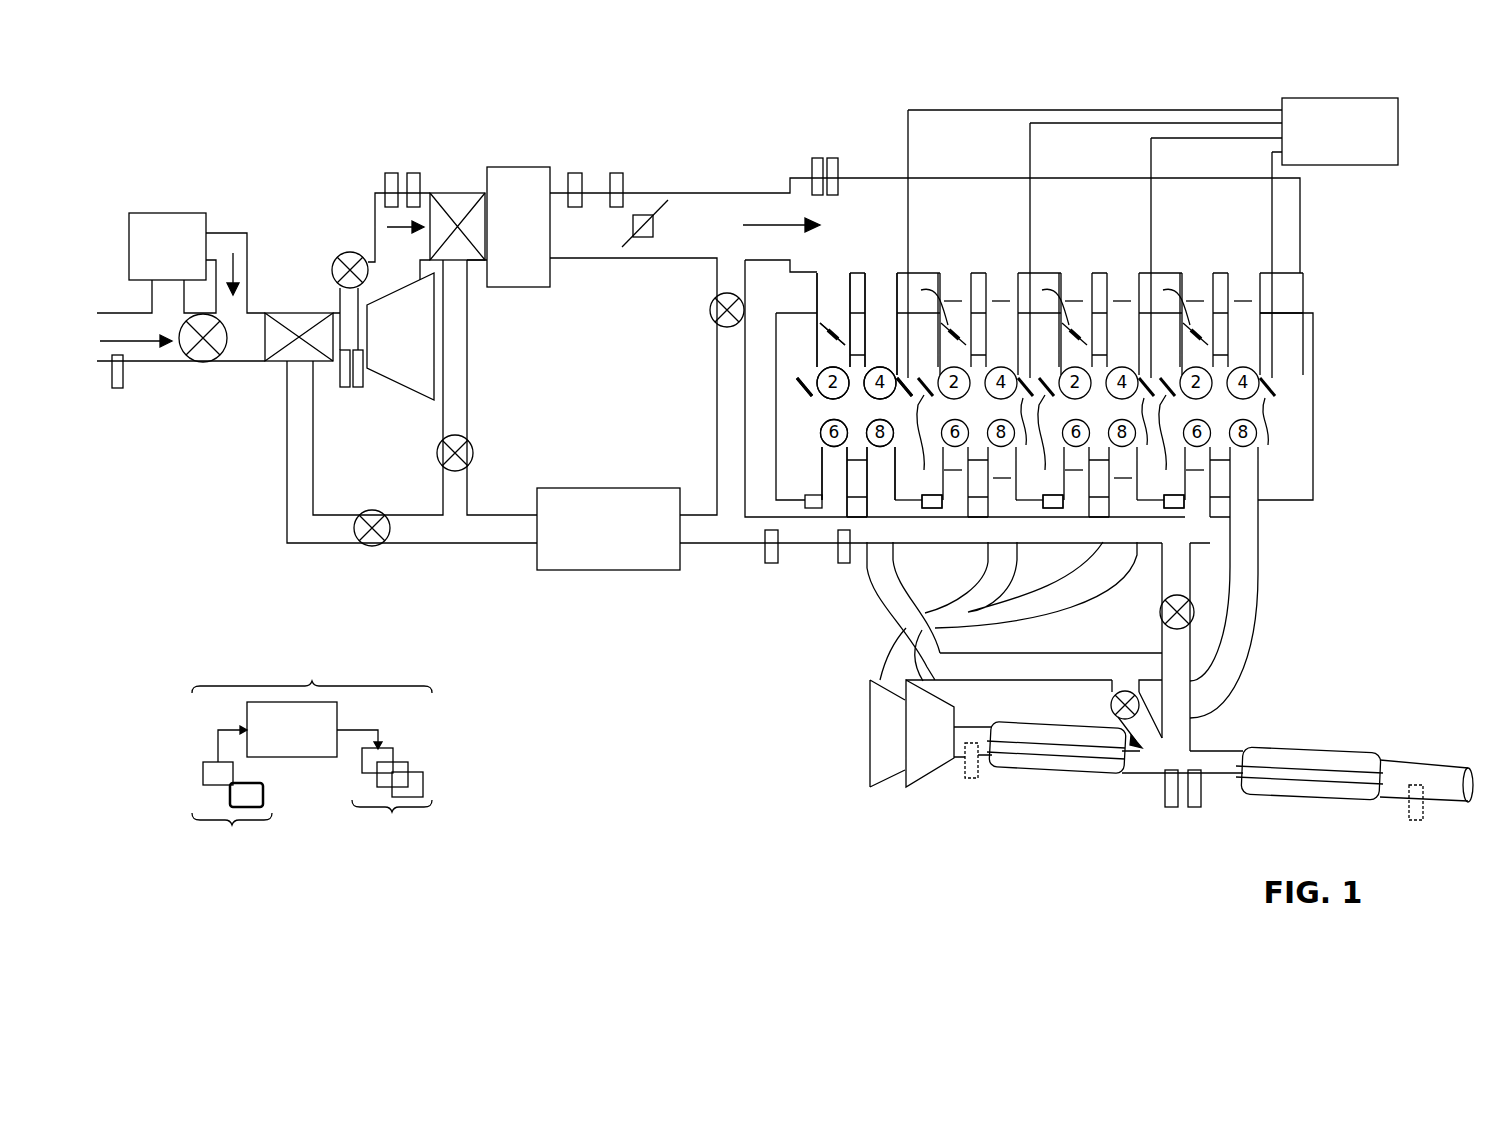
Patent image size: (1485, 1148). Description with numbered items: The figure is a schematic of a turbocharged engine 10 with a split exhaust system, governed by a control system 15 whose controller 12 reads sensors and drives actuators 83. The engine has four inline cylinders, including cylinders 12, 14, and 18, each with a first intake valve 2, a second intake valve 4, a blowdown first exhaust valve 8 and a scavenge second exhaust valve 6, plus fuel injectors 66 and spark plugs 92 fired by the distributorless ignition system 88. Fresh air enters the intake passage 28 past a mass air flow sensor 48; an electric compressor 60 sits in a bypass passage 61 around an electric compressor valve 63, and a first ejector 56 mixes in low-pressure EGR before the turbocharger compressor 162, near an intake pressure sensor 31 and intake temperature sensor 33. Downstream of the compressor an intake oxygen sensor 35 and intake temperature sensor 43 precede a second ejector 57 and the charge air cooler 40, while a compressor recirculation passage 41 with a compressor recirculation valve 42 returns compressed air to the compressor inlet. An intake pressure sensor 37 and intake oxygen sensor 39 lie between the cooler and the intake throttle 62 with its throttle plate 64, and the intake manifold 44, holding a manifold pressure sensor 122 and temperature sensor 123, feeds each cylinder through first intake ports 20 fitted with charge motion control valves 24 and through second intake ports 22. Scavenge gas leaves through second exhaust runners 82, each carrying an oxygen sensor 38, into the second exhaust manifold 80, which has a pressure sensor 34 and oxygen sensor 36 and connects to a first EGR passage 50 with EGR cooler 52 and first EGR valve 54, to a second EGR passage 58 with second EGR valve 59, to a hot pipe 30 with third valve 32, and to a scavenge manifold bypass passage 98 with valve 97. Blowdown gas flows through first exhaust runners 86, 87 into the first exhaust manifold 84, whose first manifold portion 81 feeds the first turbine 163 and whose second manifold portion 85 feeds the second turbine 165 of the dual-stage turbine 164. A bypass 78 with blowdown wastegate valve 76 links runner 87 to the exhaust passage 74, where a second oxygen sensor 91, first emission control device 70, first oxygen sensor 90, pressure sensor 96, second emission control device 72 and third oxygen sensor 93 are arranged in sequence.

The first intake valve 2 is at (833, 383).
The second intake valve 4 is at (880, 383).
The second exhaust valve 6 is at (834, 433).
The first exhaust valve 8 is at (880, 433).
The engine 10 is at (1300, 522).
The controller 12 is at (997, 425).
The cylinder 14 is at (969, 420).
The control system 15 is at (312, 757).
The cylinder 18 is at (1221, 495).
The first intake port 20 is at (823, 301).
The second intake port 22 is at (871, 301).
The charge motion control valve 24 is at (827, 325).
The air intake passage 28 is at (137, 362).
The third flow passage 30 is at (717, 375).
The intake pressure sensor 31 is at (344, 388).
The third valve 32 is at (712, 320).
The intake temperature sensor 33 is at (358, 388).
The pressure sensor 34 is at (771, 563).
The intake oxygen sensor 35 is at (412, 172).
The oxygen sensor 36 is at (844, 563).
The intake pressure sensor 37 is at (576, 173).
The oxygen sensor 38 is at (814, 508).
The intake oxygen sensor 39 is at (617, 173).
The charge air cooler 40 is at (509, 235).
The compressor recirculation passage 41 is at (340, 300).
The compressor recirculation valve 42 is at (347, 252).
The intake temperature sensor 43 is at (391, 172).
The intake manifold 44 is at (1049, 234).
The mass air flow sensor 48 is at (117, 388).
The first EGR passage 50 is at (438, 543).
The EGR cooler 52 is at (599, 541).
The first EGR valve 54 is at (365, 546).
The first ejector 56 is at (268, 362).
The second ejector 57 is at (433, 193).
The second EGR passage 58 is at (441, 415).
The second EGR valve 59 is at (473, 453).
The electric compressor 60 is at (158, 255).
The bypass passage 61 is at (224, 232).
The intake throttle 62 is at (643, 215).
The electric compressor valve 63 is at (200, 362).
The throttle plate 64 is at (627, 235).
The fuel injector 66 is at (803, 395).
The first emission control device 70 is at (1005, 724).
The second emission control device 72 is at (1280, 748).
The exhaust passage 74 is at (1140, 775).
The blowdown wastegate valve 76 is at (1113, 712).
The bypass 78 is at (1113, 694).
The second exhaust manifold 80 is at (974, 536).
The first manifold portion 81 is at (882, 662).
The second exhaust runner 82 is at (823, 470).
The actuators 83 is at (385, 790).
The first exhaust manifold 84 is at (862, 628).
The second manifold portion 85 is at (926, 677).
The first exhaust runner 86 is at (872, 478).
The first exhaust runner 87 is at (1235, 478).
The distributorless ignition system 88 is at (1313, 165).
The first oxygen sensor 90 is at (1171, 808).
The second oxygen sensor 91 is at (973, 778).
The spark plug 92 is at (902, 398).
The third oxygen sensor 93 is at (1416, 820).
The pressure sensor 96 is at (1195, 808).
The scavenge manifold bypass valve 97 is at (1195, 627).
The scavenge manifold bypass passage 98 is at (1193, 717).
The intake manifold pressure sensor 122 is at (816, 160).
The intake manifold temperature sensor 123 is at (834, 158).
The intake compressor 162 is at (385, 345).
The first turbine 163 is at (870, 772).
The dual-stage exhaust turbine 164 is at (806, 730).
The second turbine 165 is at (910, 778).